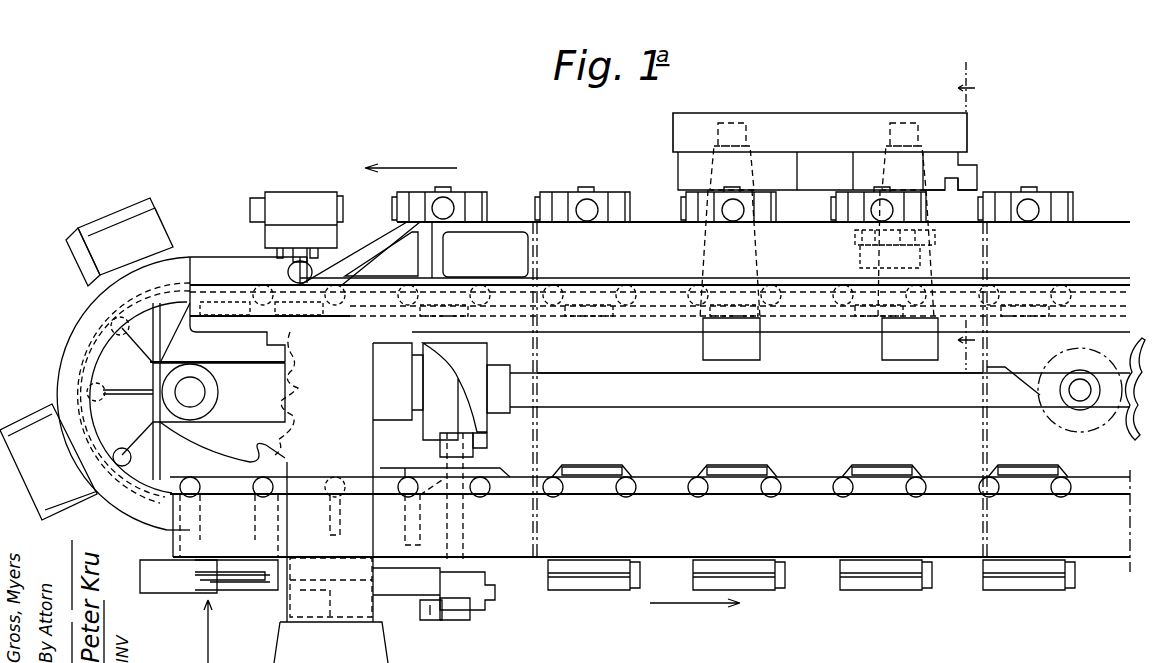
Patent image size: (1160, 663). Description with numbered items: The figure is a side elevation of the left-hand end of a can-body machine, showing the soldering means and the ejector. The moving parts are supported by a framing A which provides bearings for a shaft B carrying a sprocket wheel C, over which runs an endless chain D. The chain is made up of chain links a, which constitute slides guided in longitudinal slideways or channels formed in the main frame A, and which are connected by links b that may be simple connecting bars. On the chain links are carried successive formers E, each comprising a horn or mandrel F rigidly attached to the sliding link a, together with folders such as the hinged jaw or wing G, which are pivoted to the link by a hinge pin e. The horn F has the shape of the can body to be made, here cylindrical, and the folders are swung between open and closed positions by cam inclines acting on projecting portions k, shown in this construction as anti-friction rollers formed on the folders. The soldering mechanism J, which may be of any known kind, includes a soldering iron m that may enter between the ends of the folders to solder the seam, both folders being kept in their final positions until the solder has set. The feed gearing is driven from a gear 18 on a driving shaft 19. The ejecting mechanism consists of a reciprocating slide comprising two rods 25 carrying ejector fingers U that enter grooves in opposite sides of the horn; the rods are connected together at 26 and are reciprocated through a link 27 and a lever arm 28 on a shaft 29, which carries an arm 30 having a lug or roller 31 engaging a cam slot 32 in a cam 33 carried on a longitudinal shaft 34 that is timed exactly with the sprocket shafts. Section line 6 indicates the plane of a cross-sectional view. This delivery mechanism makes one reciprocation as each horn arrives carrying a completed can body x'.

The framing A is at (643, 318).
The links b is at (664, 296).
The endless chain D is at (822, 476).
The former E is at (640, 207).
The projecting portions k is at (290, 264).
The folder G is at (470, 202).
The soldering mechanism J is at (825, 223).
The soldering iron m is at (965, 180).
The hinge pin e is at (855, 236).
The longitudinal shaft 34 is at (760, 386).
The section line 6 is at (966, 204).
The gear 18 is at (1066, 424).
The driving shaft 19 is at (1086, 395).
The horn F is at (592, 588).
The chain link a is at (782, 582).
The completed can body x' is at (108, 389).
The shaft B is at (200, 394).
The sprocket wheel C is at (292, 416).
The cam 33 is at (499, 376).
The cam slot 32 is at (455, 378).
The lug or roller 31 is at (478, 434).
The arm 30 is at (440, 446).
The shaft 29 is at (465, 535).
The rods 25 is at (378, 560).
The connection 26 is at (485, 600).
The link 27 is at (462, 610).
The lever arm 28 is at (432, 615).
The ejector fingers U is at (222, 596).